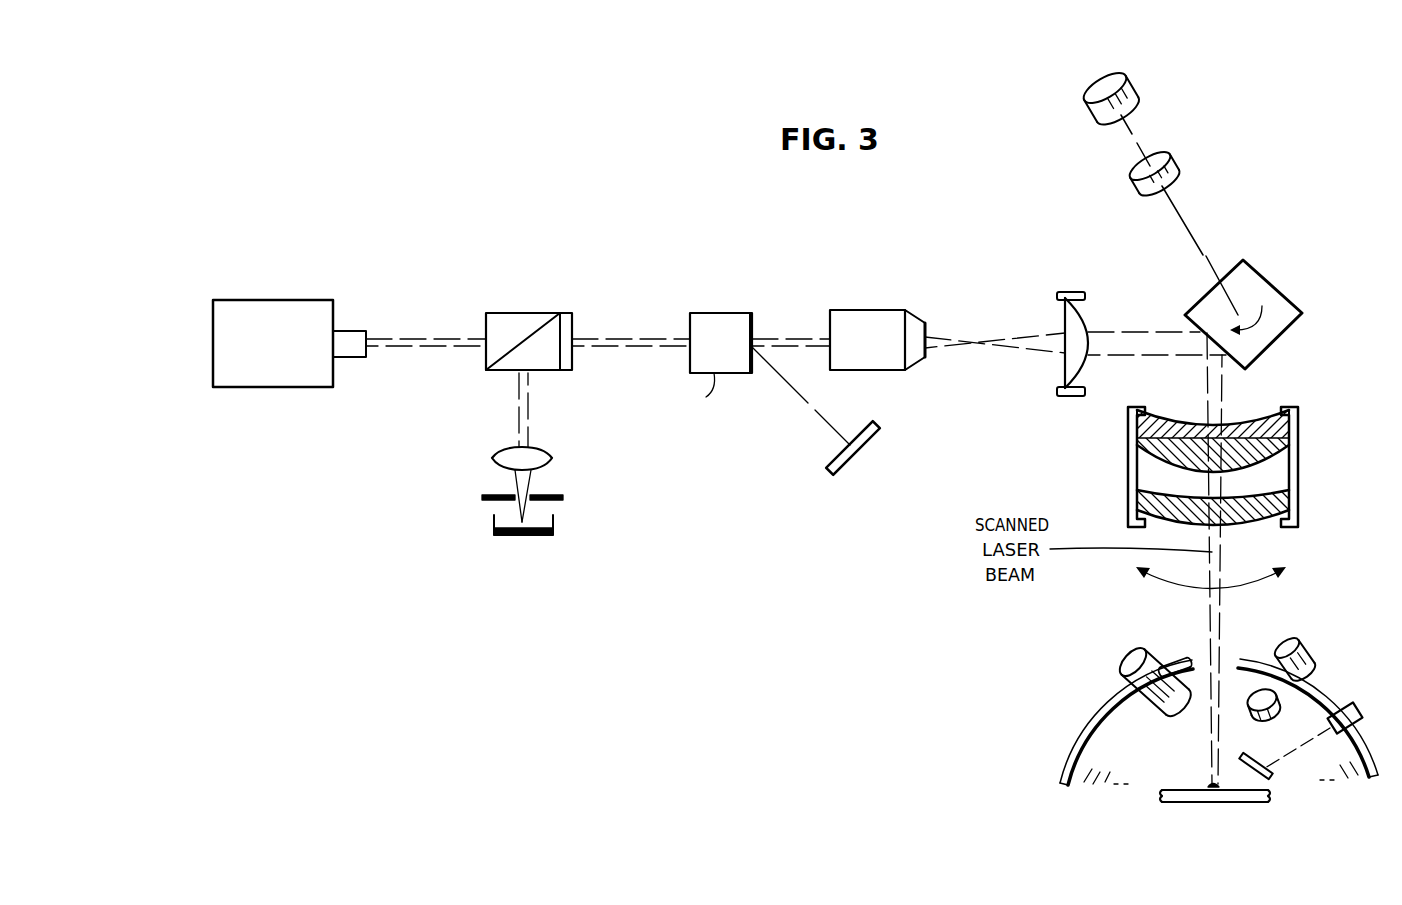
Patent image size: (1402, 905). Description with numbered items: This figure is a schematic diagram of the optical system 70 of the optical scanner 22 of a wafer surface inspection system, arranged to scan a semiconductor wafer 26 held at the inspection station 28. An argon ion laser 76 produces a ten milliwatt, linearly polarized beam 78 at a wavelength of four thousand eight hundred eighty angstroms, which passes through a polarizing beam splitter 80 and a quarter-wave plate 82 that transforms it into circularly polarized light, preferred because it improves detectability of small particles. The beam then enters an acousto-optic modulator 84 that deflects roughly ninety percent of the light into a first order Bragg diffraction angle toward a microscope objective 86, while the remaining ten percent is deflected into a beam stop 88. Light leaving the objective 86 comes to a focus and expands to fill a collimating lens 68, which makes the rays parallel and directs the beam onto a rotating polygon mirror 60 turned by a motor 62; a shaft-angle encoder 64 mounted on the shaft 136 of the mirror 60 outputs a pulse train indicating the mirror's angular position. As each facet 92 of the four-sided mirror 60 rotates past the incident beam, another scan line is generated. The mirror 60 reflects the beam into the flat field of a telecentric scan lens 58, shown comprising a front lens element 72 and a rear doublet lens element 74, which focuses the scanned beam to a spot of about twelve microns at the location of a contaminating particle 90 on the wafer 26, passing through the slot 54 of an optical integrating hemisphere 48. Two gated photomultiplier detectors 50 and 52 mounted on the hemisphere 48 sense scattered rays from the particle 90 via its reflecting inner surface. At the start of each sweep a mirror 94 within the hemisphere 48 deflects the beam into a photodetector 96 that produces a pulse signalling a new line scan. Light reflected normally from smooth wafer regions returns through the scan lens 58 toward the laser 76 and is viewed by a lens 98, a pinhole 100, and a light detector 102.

The optical scanner 22 is at (1268, 260).
The semiconductor wafer 26 is at (1175, 790).
The inspection station 28 is at (1176, 698).
The optical integrating hemisphere 48 is at (1093, 708).
The optical detector 50 is at (1300, 650).
The optical detector 52 is at (1129, 657).
The slot 54 is at (1192, 663).
The telecentric scan lens 58 is at (1232, 466).
The rotating polygon mirror 60 is at (1275, 271).
The motor 62 is at (1130, 88).
The shaft-angle encoder 64 is at (1168, 160).
The collimating lens 68 is at (1072, 291).
The optical system 70 is at (741, 317).
The front lens element 72 is at (1265, 527).
The rear doublet lens element 74 is at (1262, 412).
The argon ion laser 76 is at (296, 302).
The beam 78 is at (412, 345).
The polarizing beam splitter 80 is at (508, 322).
The quarter-wave plate 82 is at (566, 322).
The acousto-optic modulator 84 is at (737, 317).
The microscope objective 86 is at (886, 313).
The beam stop 88 is at (860, 443).
The contaminating particle 90 is at (1211, 784).
The facet 92 is at (1292, 302).
The mirror 94 is at (1272, 770).
The photodetector 96 is at (1360, 714).
The lens 98 is at (545, 458).
The pinhole 100 is at (553, 502).
The light detector 102 is at (540, 537).
The shaft 136 is at (1188, 222).